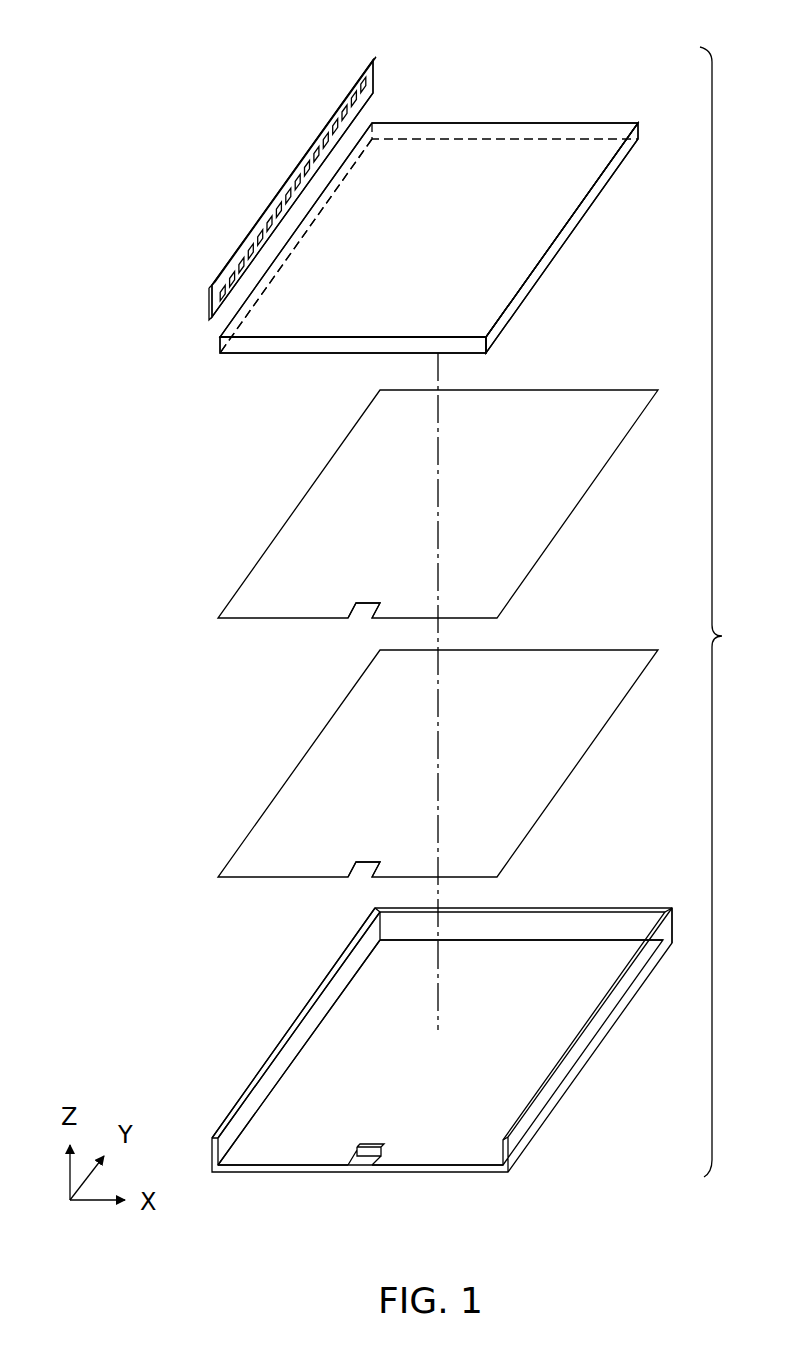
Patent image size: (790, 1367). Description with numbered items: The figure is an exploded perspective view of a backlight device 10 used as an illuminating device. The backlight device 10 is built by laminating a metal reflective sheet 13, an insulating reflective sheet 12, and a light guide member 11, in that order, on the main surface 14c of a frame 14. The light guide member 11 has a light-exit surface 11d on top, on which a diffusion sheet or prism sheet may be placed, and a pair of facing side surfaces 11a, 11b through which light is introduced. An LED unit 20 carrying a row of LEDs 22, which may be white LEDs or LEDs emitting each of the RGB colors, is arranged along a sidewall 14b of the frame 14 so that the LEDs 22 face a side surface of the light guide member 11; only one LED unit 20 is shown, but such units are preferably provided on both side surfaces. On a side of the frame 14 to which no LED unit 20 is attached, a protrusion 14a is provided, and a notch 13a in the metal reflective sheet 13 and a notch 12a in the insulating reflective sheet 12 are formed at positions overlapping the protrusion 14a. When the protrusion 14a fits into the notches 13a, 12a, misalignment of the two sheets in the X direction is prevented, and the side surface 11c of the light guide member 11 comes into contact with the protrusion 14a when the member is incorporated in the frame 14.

The backlight device 10 is at (722, 636).
The light guide member 11 is at (575, 122).
The side surface 11a is at (355, 133).
The side surface 11b is at (569, 231).
The side surface 11c is at (285, 347).
The light-exit surface 11d is at (474, 162).
The insulating reflective sheet 12 is at (598, 388).
The notch 12a is at (355, 606).
The metal reflective sheet 13 is at (598, 648).
The notch 13a is at (355, 866).
The frame 14 is at (616, 906).
The protrusion 14a is at (365, 1158).
The sidewall 14b is at (235, 1132).
The main surface 14c is at (437, 1143).
The LED unit 20 is at (379, 61).
The LED 22 is at (380, 78).